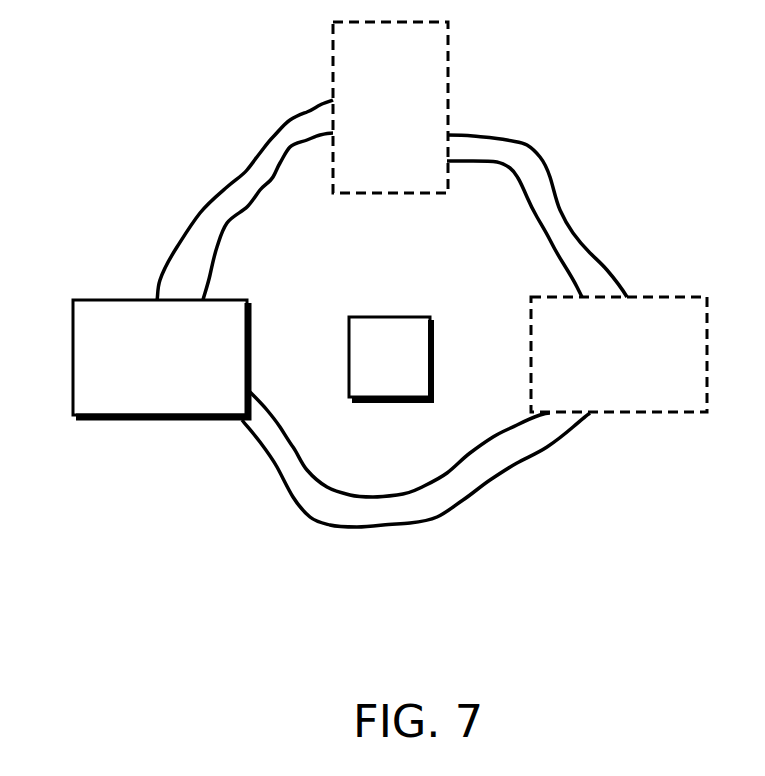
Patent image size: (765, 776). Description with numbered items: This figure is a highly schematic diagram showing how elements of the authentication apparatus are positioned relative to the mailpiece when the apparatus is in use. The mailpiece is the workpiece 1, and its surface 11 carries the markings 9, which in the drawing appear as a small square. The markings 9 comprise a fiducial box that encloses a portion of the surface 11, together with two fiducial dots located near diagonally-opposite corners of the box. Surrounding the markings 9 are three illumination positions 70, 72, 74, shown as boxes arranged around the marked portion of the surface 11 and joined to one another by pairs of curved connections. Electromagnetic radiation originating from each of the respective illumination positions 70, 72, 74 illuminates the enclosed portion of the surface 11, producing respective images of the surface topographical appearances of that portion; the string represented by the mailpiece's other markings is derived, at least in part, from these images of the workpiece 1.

The workpiece 1 is at (507, 185).
The markings 9 is at (405, 315).
The surface 11 is at (298, 177).
The illumination position 70 is at (93, 432).
The illumination position 72 is at (455, 77).
The illumination position 74 is at (669, 286).